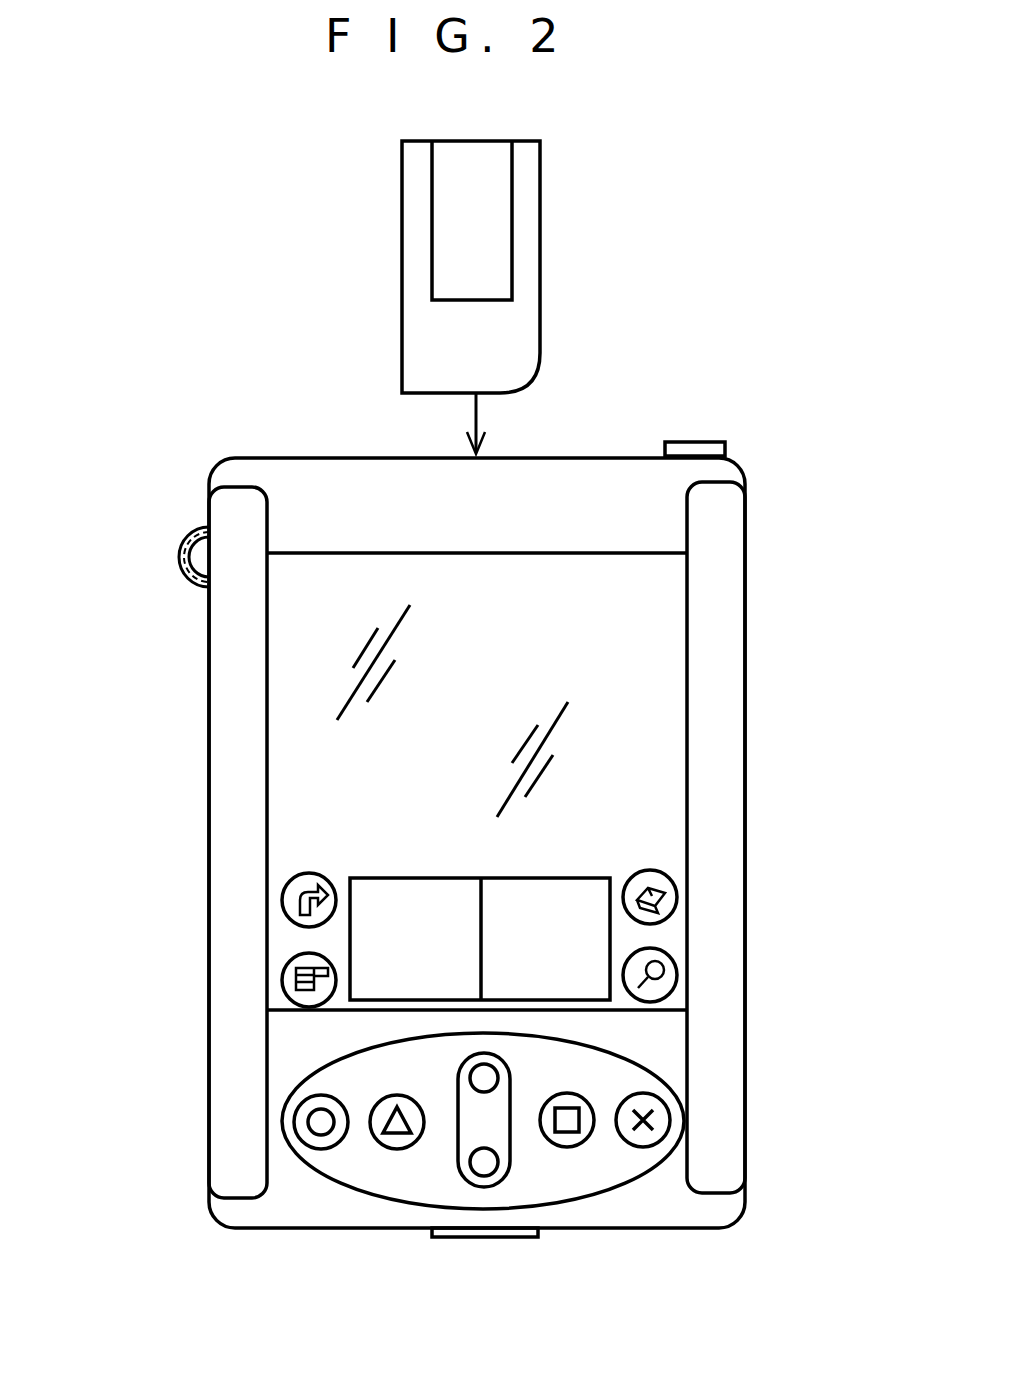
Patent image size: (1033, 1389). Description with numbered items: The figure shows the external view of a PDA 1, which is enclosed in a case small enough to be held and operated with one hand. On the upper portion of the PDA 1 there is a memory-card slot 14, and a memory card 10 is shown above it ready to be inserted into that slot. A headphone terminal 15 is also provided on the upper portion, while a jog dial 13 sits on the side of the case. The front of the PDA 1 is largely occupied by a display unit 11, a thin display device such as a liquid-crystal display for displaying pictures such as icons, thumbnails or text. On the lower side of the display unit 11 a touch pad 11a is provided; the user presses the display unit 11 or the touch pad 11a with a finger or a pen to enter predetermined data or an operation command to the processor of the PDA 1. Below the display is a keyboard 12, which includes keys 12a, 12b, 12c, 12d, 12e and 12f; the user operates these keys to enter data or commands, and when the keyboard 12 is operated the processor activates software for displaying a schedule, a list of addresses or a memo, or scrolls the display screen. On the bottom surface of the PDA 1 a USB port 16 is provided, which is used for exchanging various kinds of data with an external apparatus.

The PDA 1 is at (307, 456).
The memory card 10 is at (540, 245).
The display unit 11 is at (658, 698).
The touch pad 11a is at (575, 938).
The keyboard 12 is at (397, 1213).
The key 12a is at (293, 1122).
The key 12b is at (397, 1149).
The key 12c is at (462, 1079).
The key 12d is at (500, 1162).
The key 12e is at (573, 1094).
The key 12f is at (670, 1120).
The jog dial 13 is at (179, 557).
The memory-card slot 14 is at (483, 455).
The headphone terminal 15 is at (695, 442).
The USB port 16 is at (481, 1237).